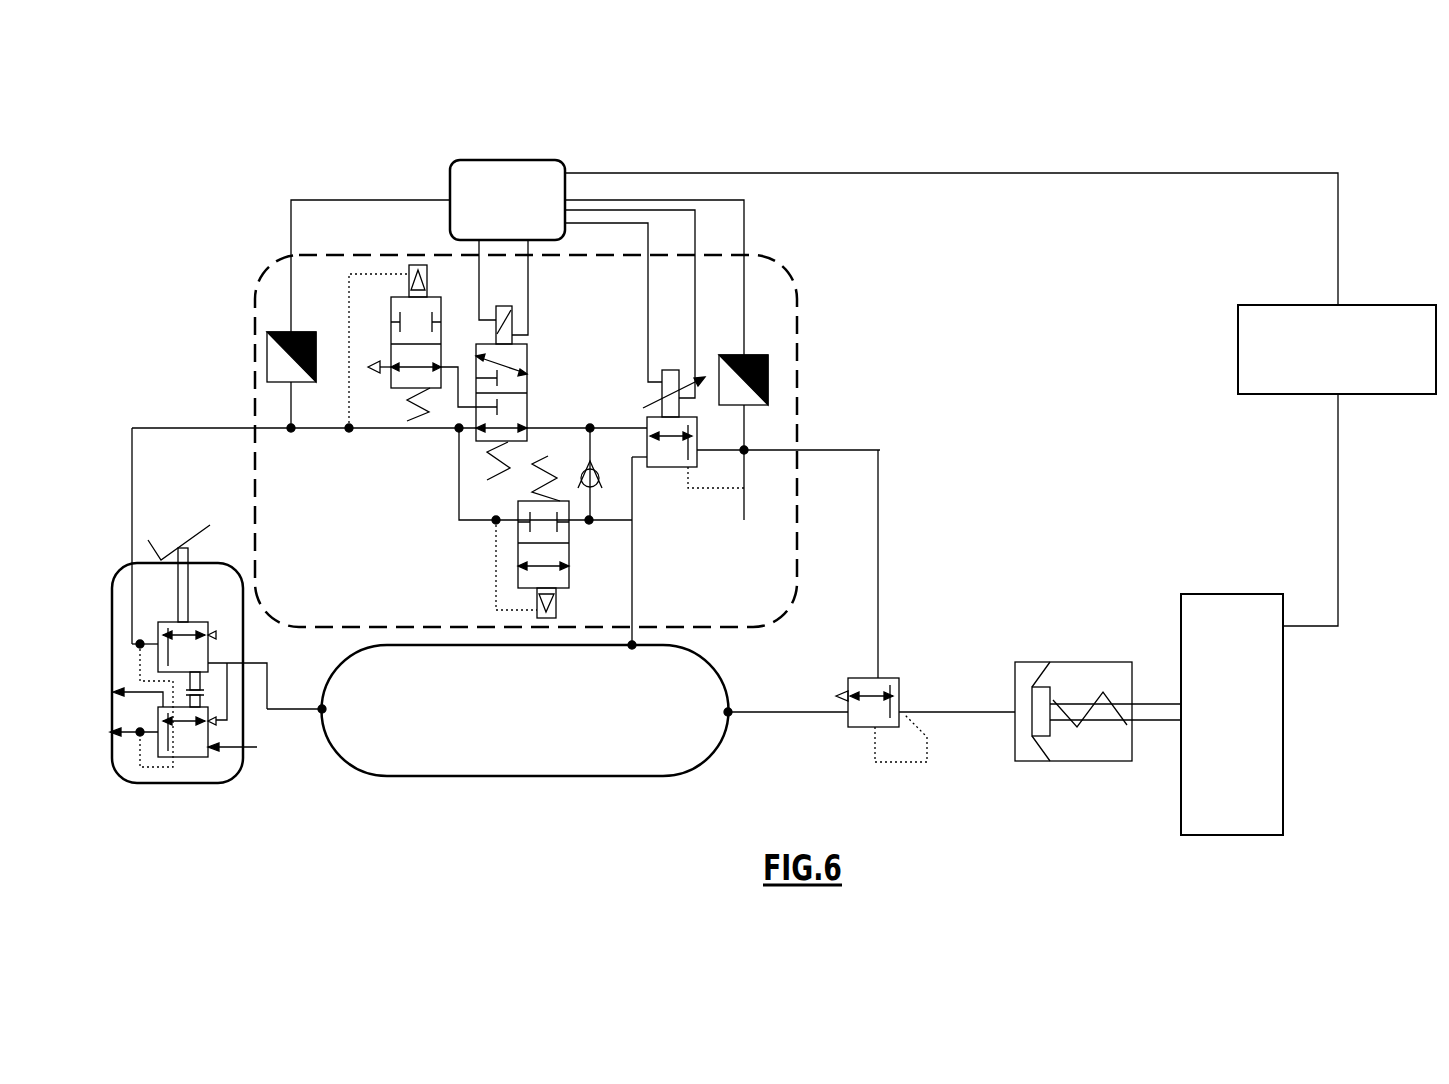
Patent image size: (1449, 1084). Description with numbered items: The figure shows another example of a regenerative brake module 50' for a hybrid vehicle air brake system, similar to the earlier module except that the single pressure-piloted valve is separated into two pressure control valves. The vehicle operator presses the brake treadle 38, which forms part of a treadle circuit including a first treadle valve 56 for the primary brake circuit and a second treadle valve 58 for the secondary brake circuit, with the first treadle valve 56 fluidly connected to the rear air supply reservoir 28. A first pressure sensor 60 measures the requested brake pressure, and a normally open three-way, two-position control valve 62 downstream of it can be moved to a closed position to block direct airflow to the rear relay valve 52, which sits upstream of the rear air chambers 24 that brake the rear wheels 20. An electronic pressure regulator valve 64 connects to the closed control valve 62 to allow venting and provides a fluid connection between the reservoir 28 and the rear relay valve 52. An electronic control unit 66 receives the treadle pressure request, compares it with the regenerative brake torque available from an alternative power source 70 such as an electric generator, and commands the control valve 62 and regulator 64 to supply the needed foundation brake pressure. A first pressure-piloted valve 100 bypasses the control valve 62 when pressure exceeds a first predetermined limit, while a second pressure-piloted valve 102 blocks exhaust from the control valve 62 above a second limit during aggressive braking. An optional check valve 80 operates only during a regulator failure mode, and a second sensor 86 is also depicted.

The electronic control unit 66 is at (530, 160).
The regenerative brake module 50' is at (593, 440).
The first pressure sensor 60 is at (267, 360).
The second pressure-piloted valve 102 is at (391, 308).
The 3/2 valve 62 is at (527, 405).
The pressure sensor 86 is at (768, 385).
The electronic pressure regulator valve 64 is at (667, 468).
The check valve 80 is at (602, 496).
The first pressure-piloted valve 100 is at (518, 555).
The brake treadle 38 is at (200, 528).
The first treadle valve 56 is at (210, 652).
The second treadle valve 58 is at (205, 757).
The rear air supply reservoir 28 is at (578, 755).
The rear relay valve 52 is at (893, 678).
The rear air chambers 24 is at (1070, 662).
The rear wheels 20 is at (1258, 750).
The alternative power source 70 is at (1337, 465).